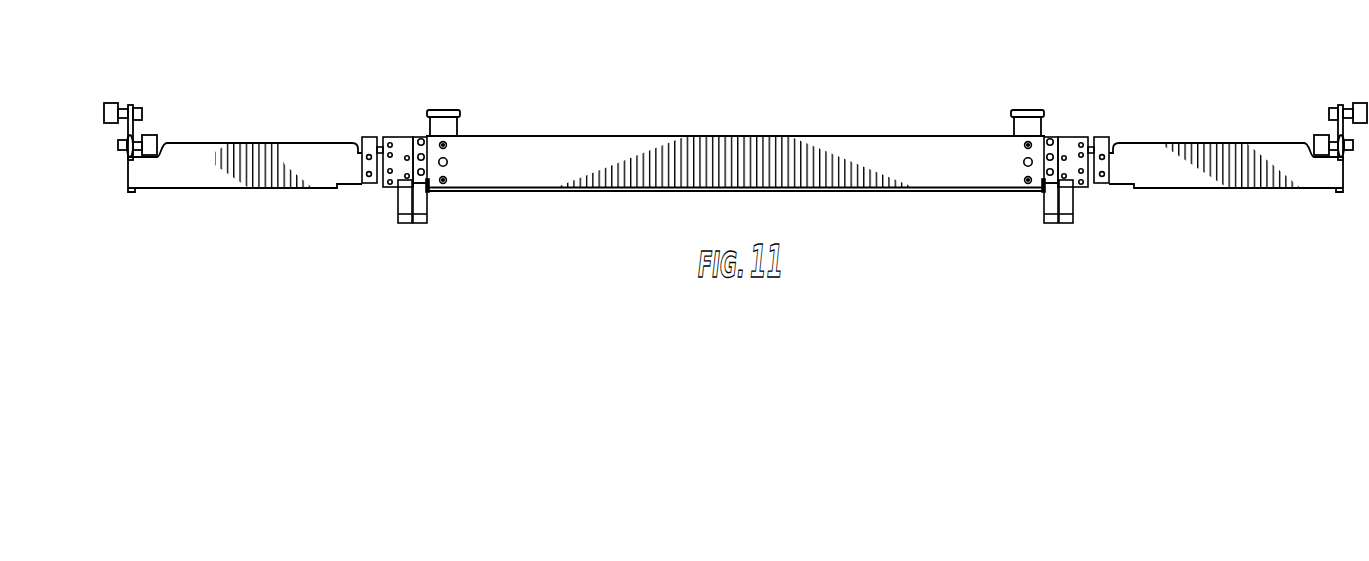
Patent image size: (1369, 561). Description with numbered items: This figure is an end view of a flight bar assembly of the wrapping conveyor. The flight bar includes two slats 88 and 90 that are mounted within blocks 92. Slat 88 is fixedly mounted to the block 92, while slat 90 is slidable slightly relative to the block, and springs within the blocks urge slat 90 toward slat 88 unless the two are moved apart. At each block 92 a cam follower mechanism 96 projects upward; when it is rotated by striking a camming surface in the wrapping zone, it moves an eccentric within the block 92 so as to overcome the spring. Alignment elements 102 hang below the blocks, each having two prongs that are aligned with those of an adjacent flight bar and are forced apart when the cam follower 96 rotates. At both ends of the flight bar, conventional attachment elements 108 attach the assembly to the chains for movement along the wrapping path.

The slat 88 is at (245, 182).
The slat 90 is at (577, 147).
The block 92 is at (455, 128).
The cam follower mechanism 96 is at (442, 108).
The alignment element 102 is at (405, 224).
The attachment element 108 is at (94, 118).